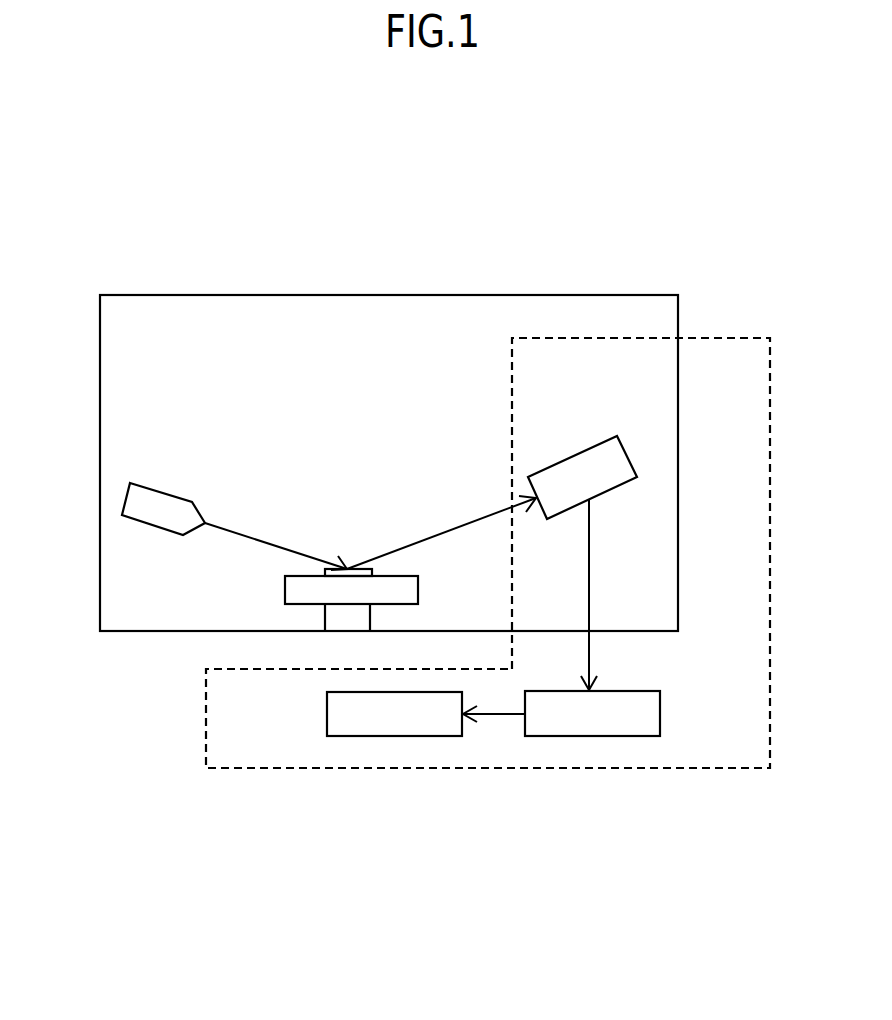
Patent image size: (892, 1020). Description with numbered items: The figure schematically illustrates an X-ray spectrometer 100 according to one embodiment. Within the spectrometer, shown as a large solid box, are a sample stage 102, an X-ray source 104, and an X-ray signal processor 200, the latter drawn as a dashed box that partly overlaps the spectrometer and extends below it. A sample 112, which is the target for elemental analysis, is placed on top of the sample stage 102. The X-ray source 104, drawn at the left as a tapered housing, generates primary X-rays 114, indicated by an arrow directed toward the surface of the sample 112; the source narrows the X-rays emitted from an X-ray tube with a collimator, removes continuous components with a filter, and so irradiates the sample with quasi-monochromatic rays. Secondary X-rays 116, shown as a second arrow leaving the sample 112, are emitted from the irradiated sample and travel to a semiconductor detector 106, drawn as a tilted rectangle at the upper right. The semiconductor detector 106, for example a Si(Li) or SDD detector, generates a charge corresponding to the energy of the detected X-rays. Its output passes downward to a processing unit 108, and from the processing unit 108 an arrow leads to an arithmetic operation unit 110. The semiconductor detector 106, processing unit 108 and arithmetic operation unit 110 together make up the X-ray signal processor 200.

The X-ray spectrometer 100 is at (386, 236).
The sample stage 102 is at (285, 588).
The X-ray source 104 is at (155, 490).
The semiconductor detector 106 is at (578, 454).
The processing unit 108 is at (660, 718).
The arithmetic operation unit 110 is at (327, 718).
The sample 112 is at (350, 565).
The primary X-rays 114 is at (245, 532).
The secondary X-rays 116 is at (440, 533).
The X-ray signal processor 200 is at (528, 769).